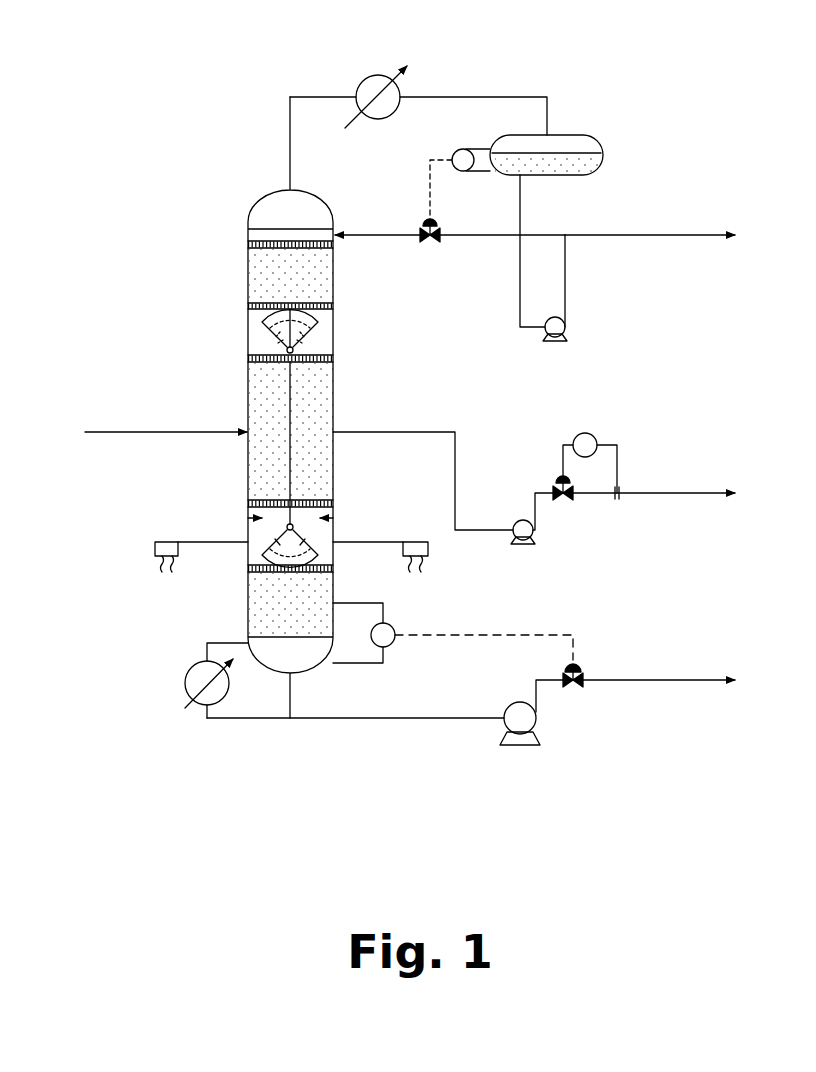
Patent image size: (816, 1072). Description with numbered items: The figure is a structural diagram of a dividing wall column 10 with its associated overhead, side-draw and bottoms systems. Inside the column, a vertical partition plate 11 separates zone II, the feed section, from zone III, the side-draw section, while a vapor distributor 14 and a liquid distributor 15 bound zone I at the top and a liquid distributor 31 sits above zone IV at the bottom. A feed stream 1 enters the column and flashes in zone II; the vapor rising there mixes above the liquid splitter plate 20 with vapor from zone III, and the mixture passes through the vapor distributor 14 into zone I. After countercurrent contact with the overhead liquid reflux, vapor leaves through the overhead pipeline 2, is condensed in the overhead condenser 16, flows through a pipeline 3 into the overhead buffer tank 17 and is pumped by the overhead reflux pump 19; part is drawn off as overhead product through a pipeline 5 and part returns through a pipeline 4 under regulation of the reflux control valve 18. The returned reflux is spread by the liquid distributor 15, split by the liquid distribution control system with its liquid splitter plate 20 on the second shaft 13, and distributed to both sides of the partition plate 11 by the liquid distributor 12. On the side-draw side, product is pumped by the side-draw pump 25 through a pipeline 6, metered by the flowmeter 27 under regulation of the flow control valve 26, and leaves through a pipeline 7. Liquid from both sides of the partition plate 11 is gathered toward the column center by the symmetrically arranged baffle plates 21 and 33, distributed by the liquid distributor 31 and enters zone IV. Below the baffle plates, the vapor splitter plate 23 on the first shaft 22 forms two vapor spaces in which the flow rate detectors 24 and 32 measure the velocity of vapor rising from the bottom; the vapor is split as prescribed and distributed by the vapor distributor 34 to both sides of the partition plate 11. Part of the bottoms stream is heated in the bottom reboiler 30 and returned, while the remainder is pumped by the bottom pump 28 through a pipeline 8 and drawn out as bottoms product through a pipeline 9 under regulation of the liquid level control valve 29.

The feed stream 1 is at (160, 428).
The overhead pipeline 2 is at (323, 83).
The pipeline 3 is at (473, 102).
The pipeline 4 is at (450, 221).
The pipeline 5 is at (650, 221).
The pipeline 6 is at (423, 466).
The pipeline 7 is at (678, 475).
The pipeline 8 is at (355, 702).
The pipeline 9 is at (659, 663).
The dividing wall column 10 is at (248, 415).
The partition plate 11 is at (290, 392).
The liquid distributor 12 is at (262, 357).
The second shaft 13 is at (288, 348).
The vapor distributor 14 is at (262, 303).
The liquid distributor 15 is at (262, 243).
The overhead condenser 16 is at (366, 80).
The overhead buffer tank 17 is at (585, 135).
The reflux control valve 18 is at (430, 275).
The overhead reflux pump 19 is at (598, 368).
The liquid splitter plate 20 is at (300, 320).
The baffle plate 21 is at (334, 518).
The first shaft 22 is at (294, 528).
The vapor splitter plate 23 is at (312, 555).
The flow rate detector 24 is at (440, 577).
The side-draw pump 25 is at (548, 582).
The flow control valve 26 is at (608, 558).
The flowmeter 27 is at (688, 558).
The bottom pump 28 is at (552, 795).
The liquid level control valve 29 is at (615, 745).
The bottom reboiler 30 is at (190, 692).
The liquid distributor 31 is at (248, 572).
The flow rate detector 32 is at (155, 556).
The baffle plate 33 is at (248, 518).
The vapor distributor 34 is at (248, 503).